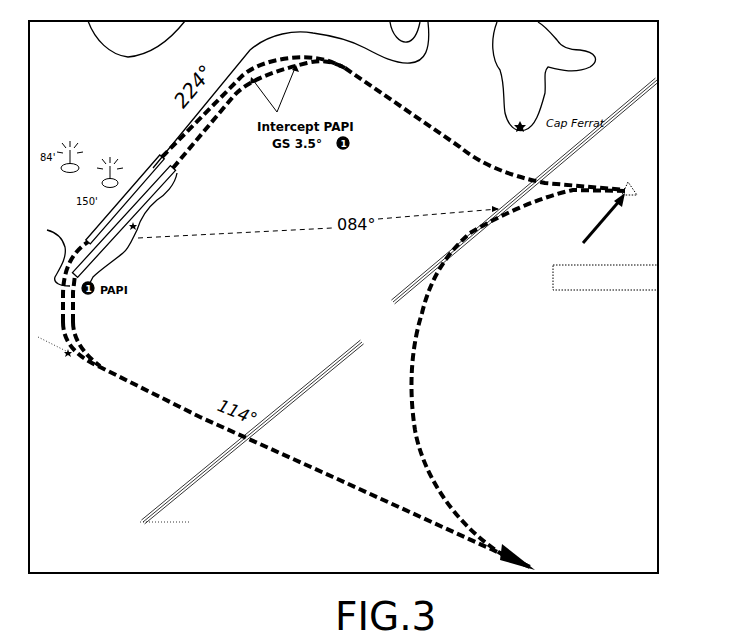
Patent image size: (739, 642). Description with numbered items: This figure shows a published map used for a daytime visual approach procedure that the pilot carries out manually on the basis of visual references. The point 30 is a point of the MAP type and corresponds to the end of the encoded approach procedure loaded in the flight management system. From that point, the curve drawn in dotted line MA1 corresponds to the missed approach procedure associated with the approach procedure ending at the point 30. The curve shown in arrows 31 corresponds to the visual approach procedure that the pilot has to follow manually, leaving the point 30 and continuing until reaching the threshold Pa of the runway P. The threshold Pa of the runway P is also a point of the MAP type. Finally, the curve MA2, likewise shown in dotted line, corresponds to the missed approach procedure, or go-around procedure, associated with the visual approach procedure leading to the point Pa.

The point of the MAP type 30 is at (637, 181).
The visual approach procedure curve 31 is at (470, 160).
The missed approach procedure MA1 is at (413, 427).
The missed approach procedure MA2 is at (153, 395).
The runway P is at (152, 196).
The threshold of the runway Pa is at (174, 171).